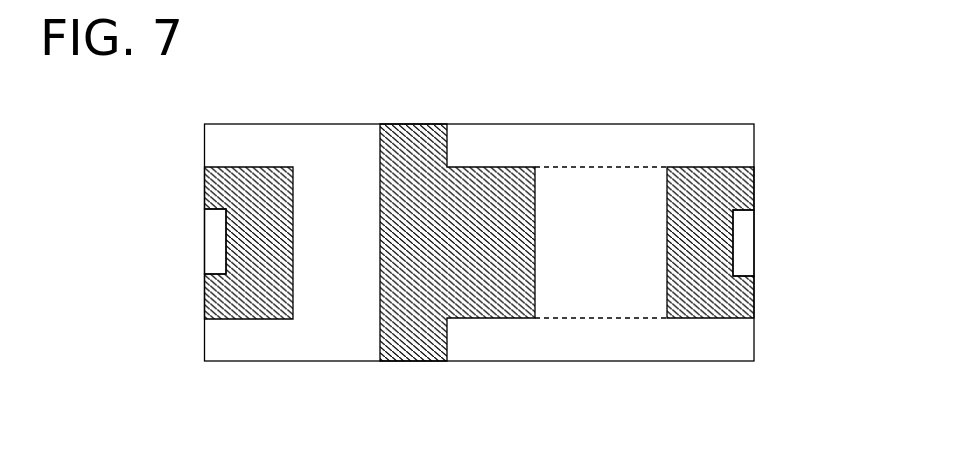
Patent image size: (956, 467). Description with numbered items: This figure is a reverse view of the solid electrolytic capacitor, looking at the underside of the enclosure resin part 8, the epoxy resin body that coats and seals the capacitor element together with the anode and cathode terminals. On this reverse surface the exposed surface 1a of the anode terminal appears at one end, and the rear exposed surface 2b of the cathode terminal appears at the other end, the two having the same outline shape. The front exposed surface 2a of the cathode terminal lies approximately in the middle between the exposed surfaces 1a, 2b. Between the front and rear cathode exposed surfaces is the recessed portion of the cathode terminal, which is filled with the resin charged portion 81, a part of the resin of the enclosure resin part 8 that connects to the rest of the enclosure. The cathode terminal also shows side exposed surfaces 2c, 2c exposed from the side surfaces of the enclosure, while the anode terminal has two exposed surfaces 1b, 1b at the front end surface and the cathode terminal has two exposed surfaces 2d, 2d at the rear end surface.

The enclosure resin part 8 is at (598, 130).
The resin charged portion 81 is at (588, 283).
The exposed surface of the anode terminal 1a is at (255, 295).
The exposed surfaces of the anode terminal 1b is at (204, 190).
The front exposed surface of the cathode terminal 2a is at (401, 288).
The rear exposed surface of the cathode terminal 2b is at (703, 272).
The exposed surfaces of the cathode terminal 2c is at (412, 122).
The exposed surfaces of the cathode terminal 2d is at (755, 192).